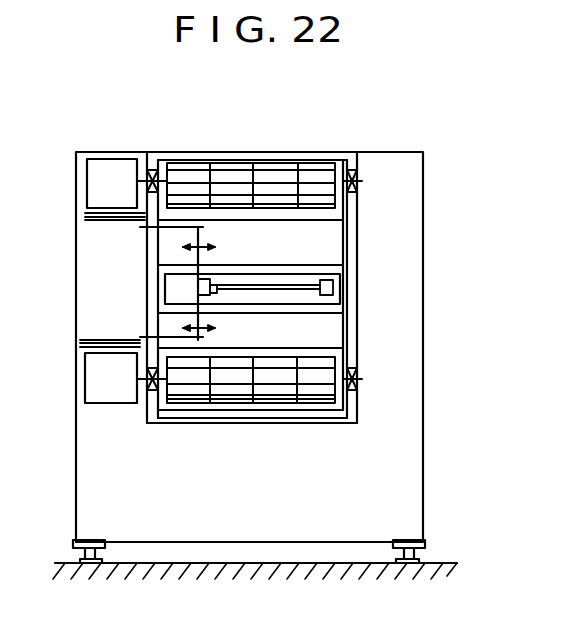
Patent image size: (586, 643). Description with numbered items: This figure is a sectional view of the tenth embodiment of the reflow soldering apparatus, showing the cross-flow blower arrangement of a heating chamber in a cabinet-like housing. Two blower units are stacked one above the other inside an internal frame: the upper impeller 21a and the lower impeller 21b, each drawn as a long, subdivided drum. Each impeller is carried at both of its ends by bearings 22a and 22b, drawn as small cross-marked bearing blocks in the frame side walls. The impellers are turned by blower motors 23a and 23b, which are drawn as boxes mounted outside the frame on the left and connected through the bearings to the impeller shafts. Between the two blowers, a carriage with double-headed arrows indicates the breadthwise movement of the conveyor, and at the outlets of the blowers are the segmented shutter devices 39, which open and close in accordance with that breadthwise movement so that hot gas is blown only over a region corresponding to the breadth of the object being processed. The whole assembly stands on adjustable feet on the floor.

The upper cassette shelf 21a is at (241, 164).
The lower cassette shelf 21b is at (241, 410).
The upper valves 22a is at (155, 158).
The lower valves 22b is at (152, 423).
The upper gas supply unit 23a is at (105, 157).
The lower gas supply unit 23b is at (113, 405).
The segmented shutter device 39 is at (120, 223).